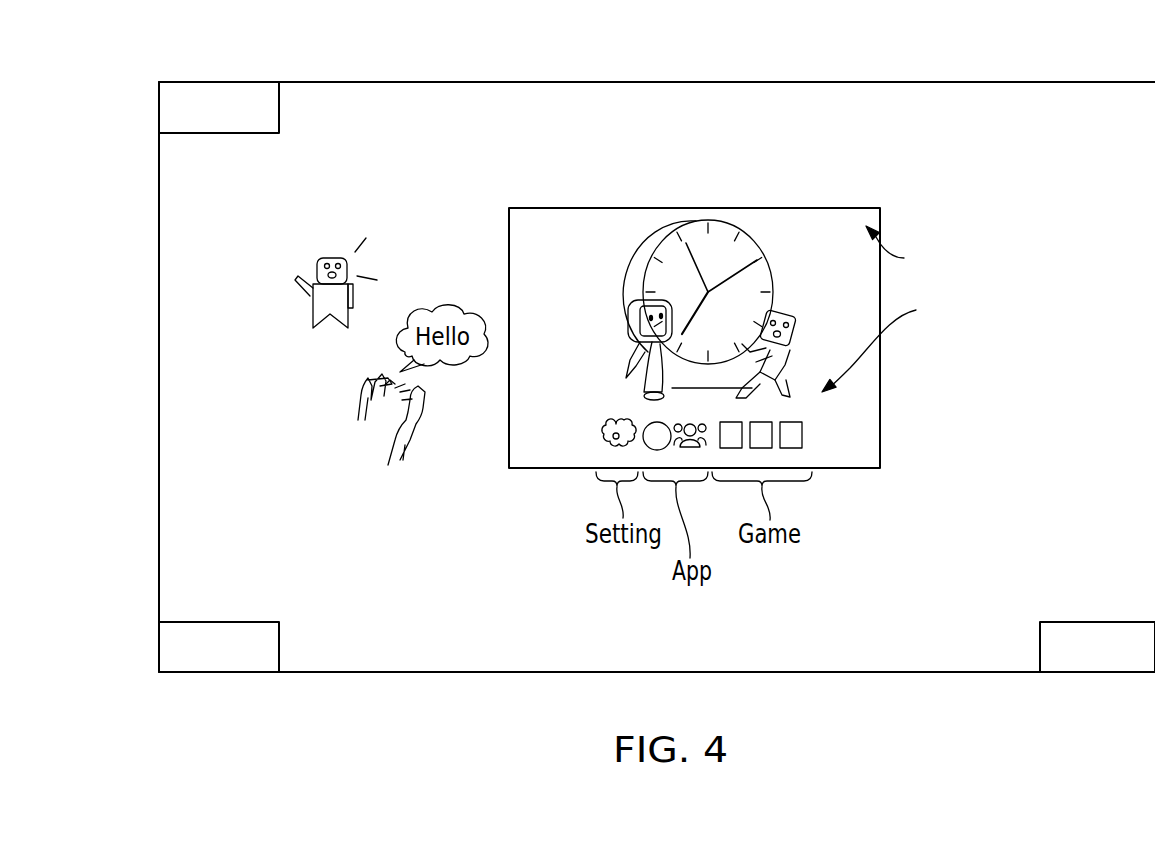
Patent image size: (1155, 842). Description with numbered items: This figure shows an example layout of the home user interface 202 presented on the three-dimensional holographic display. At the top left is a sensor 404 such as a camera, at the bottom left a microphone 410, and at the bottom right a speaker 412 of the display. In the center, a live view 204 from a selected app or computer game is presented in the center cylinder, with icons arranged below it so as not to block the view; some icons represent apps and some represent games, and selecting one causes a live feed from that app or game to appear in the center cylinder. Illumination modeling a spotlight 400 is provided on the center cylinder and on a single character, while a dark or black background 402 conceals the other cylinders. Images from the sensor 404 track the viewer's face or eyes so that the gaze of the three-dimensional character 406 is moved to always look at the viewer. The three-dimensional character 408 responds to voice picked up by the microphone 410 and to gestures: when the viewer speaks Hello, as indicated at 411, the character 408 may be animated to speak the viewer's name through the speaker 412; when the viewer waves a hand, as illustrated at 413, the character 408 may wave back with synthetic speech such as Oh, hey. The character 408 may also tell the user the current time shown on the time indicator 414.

The home user interface 202 is at (570, 78).
The live view 204 is at (803, 436).
The spotlight illumination 400 is at (980, 325).
The black background 402 is at (937, 232).
The sensor 404 is at (280, 107).
The 3D character 406 is at (793, 310).
The 3D character 408 is at (628, 328).
The microphone 410 is at (280, 637).
The viewer speaking Hello 411 is at (397, 240).
The speaker 412 is at (1040, 640).
The viewer hand wave 413 is at (353, 404).
The time indicator 414 is at (697, 220).